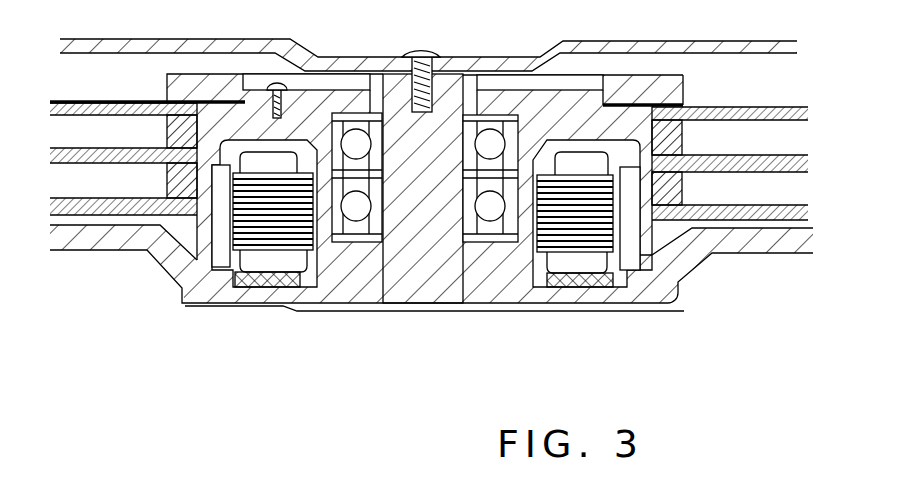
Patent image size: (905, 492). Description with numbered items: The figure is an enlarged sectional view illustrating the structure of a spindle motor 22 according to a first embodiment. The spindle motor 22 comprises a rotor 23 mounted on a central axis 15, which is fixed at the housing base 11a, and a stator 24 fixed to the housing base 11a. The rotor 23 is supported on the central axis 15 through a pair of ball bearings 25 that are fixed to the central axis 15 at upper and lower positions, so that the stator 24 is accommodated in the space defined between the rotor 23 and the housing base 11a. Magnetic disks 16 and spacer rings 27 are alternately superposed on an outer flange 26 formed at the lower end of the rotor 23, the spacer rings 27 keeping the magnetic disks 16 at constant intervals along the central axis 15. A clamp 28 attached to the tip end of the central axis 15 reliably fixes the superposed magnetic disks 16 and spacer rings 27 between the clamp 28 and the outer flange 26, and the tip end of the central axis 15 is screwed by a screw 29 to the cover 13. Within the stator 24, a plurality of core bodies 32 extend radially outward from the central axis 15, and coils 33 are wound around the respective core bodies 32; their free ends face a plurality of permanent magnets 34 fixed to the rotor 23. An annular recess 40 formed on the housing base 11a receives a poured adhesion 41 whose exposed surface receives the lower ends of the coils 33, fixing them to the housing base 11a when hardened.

The cover 13 is at (720, 38).
The central axis 15 is at (398, 303).
The magnetic disks 16 is at (62, 102).
The spindle motor 22 is at (363, 325).
The rotor 23 is at (645, 110).
The stator 24 is at (528, 280).
The ball bearings 25 is at (383, 149).
The outer flange 26 is at (172, 268).
The spacer rings 27 is at (167, 124).
The clamp 28 is at (167, 74).
The screw 29 is at (437, 47).
The core bodies 32 is at (563, 280).
The coils 33 is at (628, 272).
The permanent magnets 34 is at (648, 280).
The annular recess 40 is at (287, 293).
The adhesion 41 is at (238, 298).
The housing base 11a is at (463, 308).